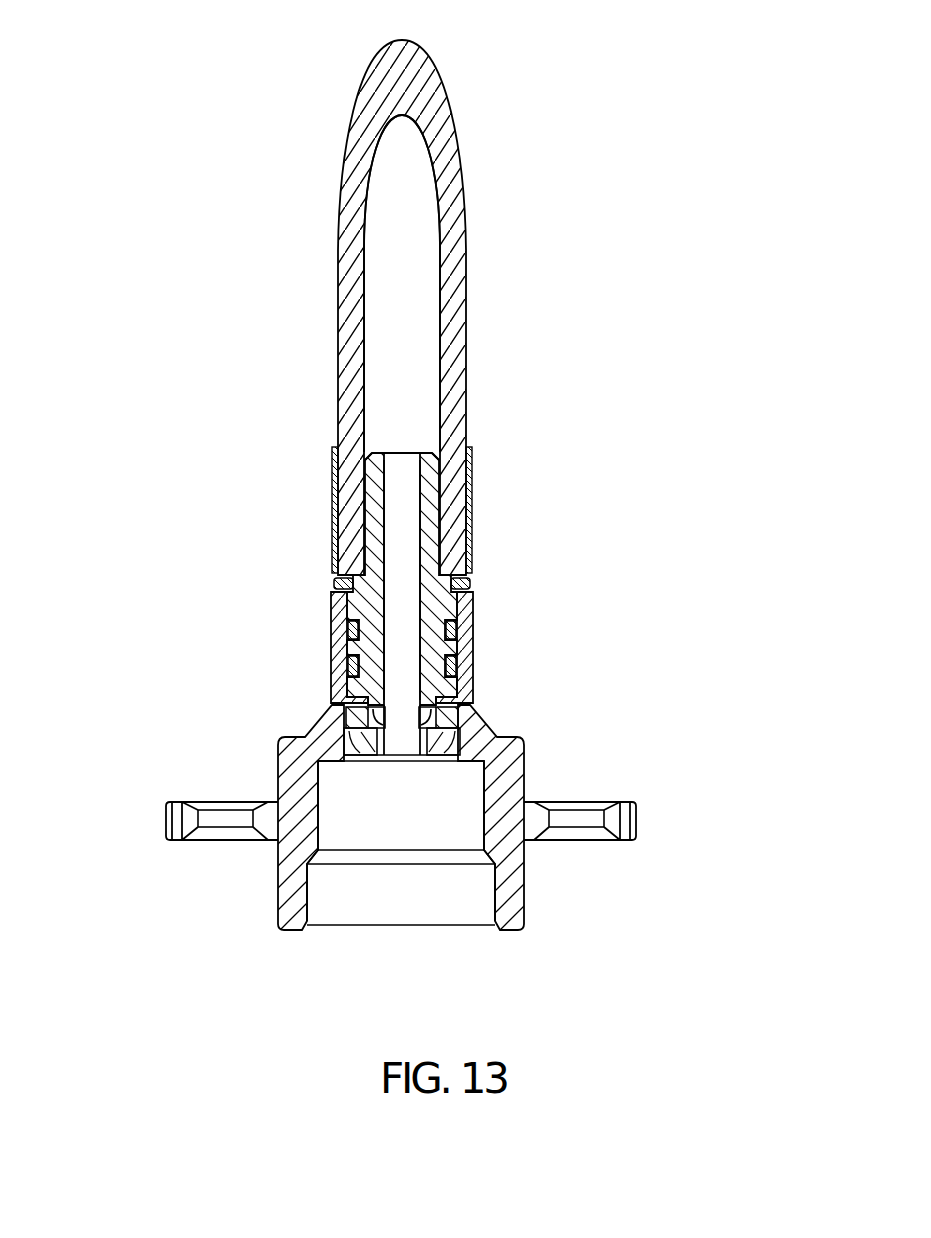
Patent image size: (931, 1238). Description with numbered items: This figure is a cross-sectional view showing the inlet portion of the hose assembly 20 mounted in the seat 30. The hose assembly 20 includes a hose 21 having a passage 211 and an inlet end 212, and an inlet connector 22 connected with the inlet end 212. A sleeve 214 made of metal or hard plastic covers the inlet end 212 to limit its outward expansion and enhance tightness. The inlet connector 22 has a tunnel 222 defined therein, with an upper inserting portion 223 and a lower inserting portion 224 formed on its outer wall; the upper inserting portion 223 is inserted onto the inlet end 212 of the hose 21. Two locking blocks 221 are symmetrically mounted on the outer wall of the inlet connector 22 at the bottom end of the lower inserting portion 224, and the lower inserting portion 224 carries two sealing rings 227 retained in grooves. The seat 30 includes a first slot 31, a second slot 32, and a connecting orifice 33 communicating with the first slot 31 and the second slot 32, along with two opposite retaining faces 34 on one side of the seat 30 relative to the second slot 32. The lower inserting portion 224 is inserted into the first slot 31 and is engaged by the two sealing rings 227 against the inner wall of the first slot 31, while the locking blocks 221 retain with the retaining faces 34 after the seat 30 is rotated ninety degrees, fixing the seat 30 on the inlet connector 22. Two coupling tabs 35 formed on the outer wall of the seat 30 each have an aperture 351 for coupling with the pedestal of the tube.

The hose assembly 20 is at (474, 153).
The hose 21 is at (460, 310).
The passage 211 is at (425, 222).
The inlet end 212 is at (345, 580).
The sleeve 214 is at (472, 480).
The inlet connector 22 is at (442, 520).
The locking blocks 221 is at (445, 748).
The tunnel 222 is at (398, 537).
The upper inserting portion 223 is at (366, 492).
The lower inserting portion 224 is at (345, 690).
The sealing rings 227 is at (462, 630).
The seat 30 is at (603, 784).
The first slot 31 is at (445, 603).
The second slot 32 is at (404, 830).
The connecting orifice 33 is at (455, 712).
The retaining faces 34 is at (440, 716).
The coupling tabs 35 is at (176, 821).
The aperture 351 is at (228, 823).